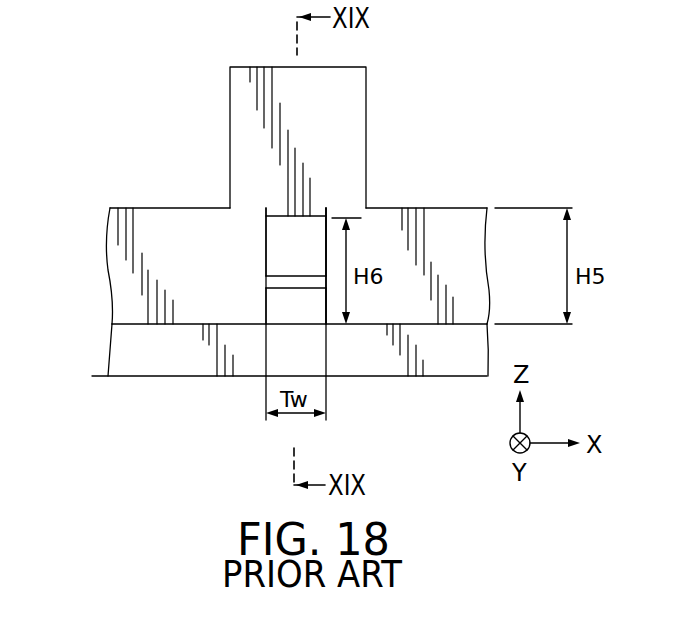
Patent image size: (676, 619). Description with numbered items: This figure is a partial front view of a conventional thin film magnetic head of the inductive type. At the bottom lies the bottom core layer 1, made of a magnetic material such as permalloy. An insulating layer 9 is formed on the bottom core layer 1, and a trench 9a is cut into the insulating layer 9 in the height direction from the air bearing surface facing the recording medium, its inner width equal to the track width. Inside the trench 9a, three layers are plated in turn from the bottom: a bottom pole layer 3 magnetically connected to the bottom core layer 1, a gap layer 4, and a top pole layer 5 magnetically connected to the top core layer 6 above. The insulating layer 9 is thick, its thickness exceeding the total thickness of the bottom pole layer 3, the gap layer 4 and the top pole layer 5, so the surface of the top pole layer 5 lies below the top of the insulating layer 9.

The bottom core layer 1 is at (445, 380).
The bottom pole layer 3 is at (282, 308).
The gap layer 4 is at (282, 282).
The top pole layer 5 is at (282, 248).
The top core layer 6 is at (345, 92).
The insulating layer 9 is at (122, 283).
The trench 9a is at (305, 312).